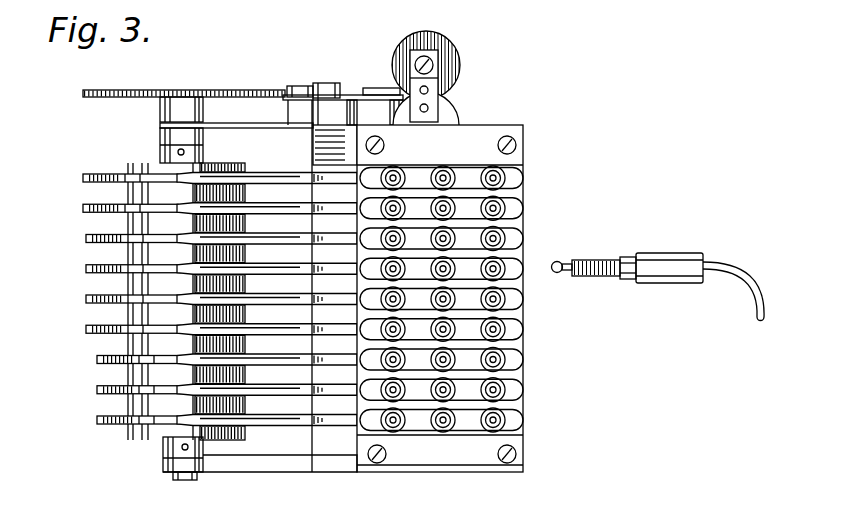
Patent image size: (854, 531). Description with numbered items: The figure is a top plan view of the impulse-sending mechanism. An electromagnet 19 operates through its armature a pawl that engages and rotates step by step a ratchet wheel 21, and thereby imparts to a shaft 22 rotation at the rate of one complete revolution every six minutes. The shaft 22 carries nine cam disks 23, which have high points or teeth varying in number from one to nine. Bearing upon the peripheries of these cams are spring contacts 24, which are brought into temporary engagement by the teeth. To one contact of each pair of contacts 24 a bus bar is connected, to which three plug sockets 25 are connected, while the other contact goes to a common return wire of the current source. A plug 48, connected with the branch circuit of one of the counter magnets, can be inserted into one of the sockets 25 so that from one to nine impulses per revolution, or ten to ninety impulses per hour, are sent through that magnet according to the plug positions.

The electromagnet 19 is at (462, 67).
The ratchet wheel 21 is at (227, 88).
The shaft 22 is at (192, 480).
The cam disks 23 is at (97, 360).
The spring contacts 24 is at (277, 422).
The plug sockets 25 is at (503, 208).
The plug 48 is at (602, 270).